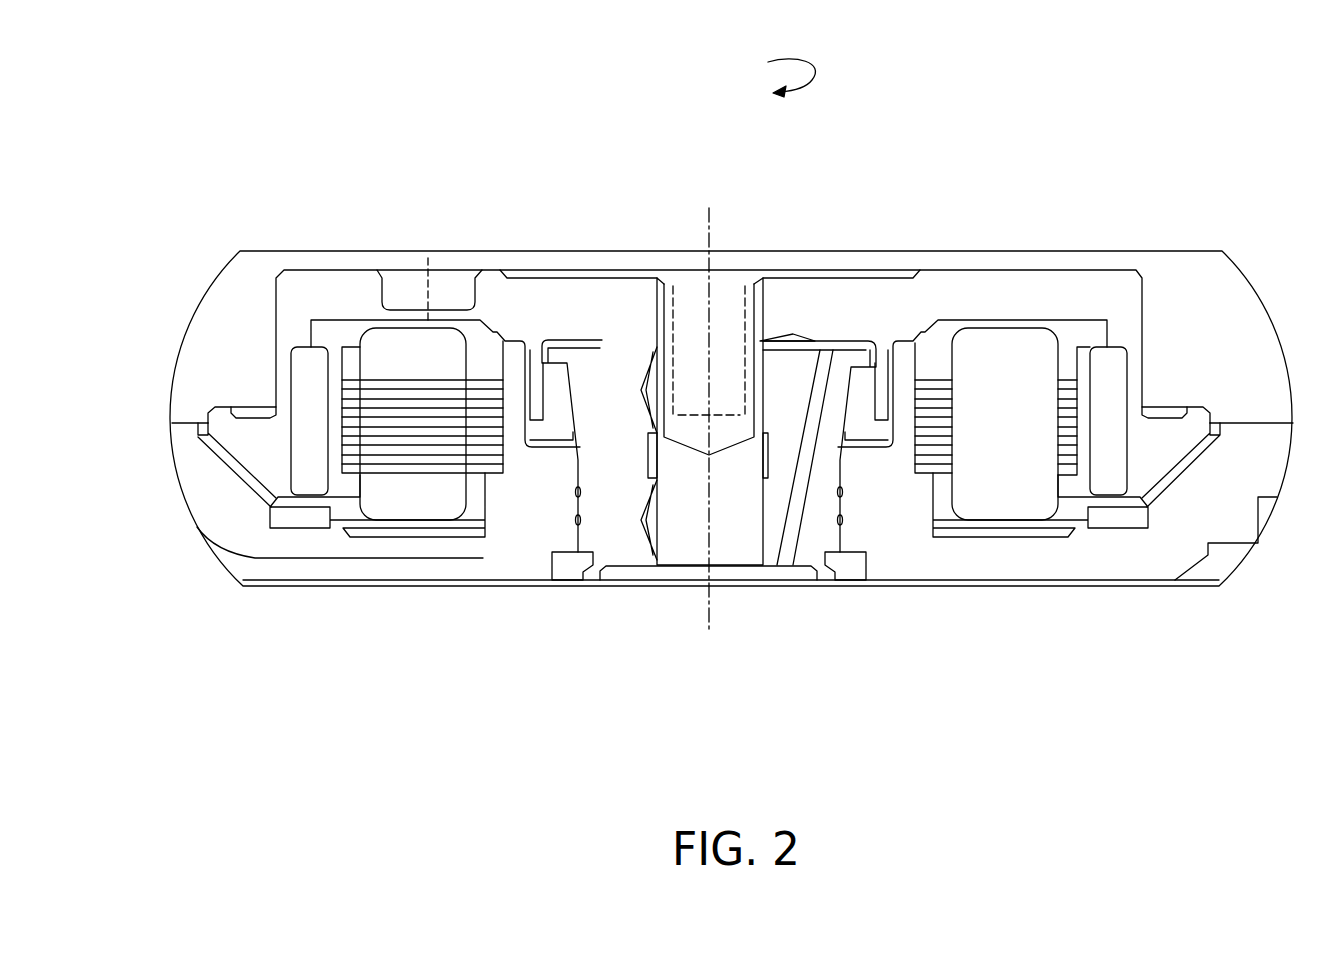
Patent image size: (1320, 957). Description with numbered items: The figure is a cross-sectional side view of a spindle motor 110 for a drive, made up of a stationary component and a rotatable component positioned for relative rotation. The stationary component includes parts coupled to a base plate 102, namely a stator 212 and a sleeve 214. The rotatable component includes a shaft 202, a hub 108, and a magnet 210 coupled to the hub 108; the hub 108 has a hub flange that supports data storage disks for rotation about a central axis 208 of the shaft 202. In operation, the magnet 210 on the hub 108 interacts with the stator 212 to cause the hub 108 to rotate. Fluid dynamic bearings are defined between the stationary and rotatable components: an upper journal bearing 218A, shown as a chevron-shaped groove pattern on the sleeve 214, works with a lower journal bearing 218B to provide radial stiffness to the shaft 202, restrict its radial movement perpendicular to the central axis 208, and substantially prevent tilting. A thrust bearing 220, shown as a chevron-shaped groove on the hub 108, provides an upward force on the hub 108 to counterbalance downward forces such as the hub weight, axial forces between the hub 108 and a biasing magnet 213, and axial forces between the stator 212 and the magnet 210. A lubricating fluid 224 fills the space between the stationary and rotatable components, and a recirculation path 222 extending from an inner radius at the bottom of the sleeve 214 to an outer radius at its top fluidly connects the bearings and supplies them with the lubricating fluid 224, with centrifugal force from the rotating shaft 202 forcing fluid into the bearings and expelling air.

The base plate 102 is at (498, 523).
The hub 108 is at (968, 290).
The spindle motor 110 is at (766, 76).
The shaft 202 is at (732, 547).
The central axis 208 is at (710, 225).
The magnet 210 is at (303, 440).
The stator 212 is at (410, 503).
The biasing magnet 213 is at (1125, 515).
The sleeve 214 is at (622, 503).
The journal bearing 218A is at (652, 347).
The lower journal bearing 218B is at (649, 545).
The thrust bearing 220 is at (786, 338).
The recirculation path 222 is at (798, 508).
The lubricating fluid 224 is at (850, 413).